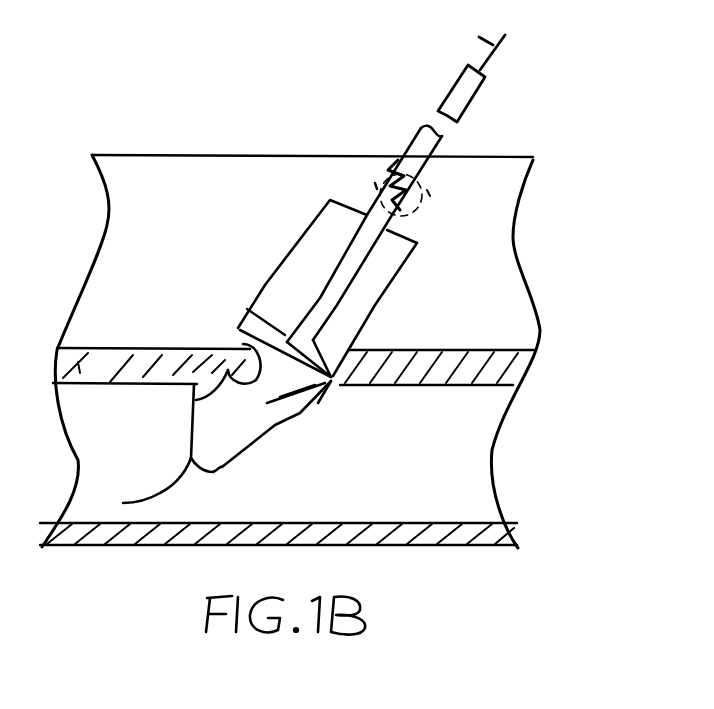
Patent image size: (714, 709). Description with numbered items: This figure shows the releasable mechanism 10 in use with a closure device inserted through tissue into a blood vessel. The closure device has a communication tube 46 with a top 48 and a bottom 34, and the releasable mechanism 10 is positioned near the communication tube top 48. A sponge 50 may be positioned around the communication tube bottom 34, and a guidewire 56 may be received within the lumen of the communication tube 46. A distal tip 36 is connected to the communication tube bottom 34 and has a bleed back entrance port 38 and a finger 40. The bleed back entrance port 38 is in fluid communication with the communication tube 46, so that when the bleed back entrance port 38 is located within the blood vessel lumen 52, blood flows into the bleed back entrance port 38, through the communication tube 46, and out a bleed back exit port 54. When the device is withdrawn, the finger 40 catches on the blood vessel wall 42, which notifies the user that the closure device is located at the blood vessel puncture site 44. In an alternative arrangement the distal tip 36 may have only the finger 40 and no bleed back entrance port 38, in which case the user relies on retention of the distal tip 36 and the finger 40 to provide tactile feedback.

The releasable mechanism 10 is at (344, 256).
The communication tube bottom 34 is at (247, 309).
The distal tip 36 is at (240, 434).
The bleed back entrance port 38 is at (193, 398).
The finger 40 is at (326, 397).
The blood vessel wall 42 is at (455, 348).
The blood vessel puncture site 44 is at (238, 343).
The communication tube 46 is at (342, 267).
The communication tube top 48 is at (370, 211).
The sponge 50 is at (367, 295).
The blood vessel lumen 52 is at (442, 468).
The bleed back exit port 54 is at (483, 75).
The guidewire 56 is at (163, 493).